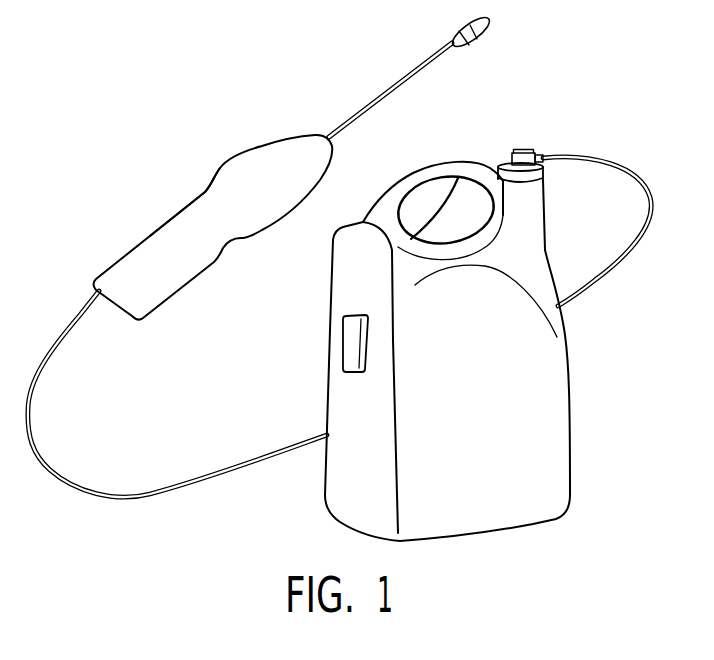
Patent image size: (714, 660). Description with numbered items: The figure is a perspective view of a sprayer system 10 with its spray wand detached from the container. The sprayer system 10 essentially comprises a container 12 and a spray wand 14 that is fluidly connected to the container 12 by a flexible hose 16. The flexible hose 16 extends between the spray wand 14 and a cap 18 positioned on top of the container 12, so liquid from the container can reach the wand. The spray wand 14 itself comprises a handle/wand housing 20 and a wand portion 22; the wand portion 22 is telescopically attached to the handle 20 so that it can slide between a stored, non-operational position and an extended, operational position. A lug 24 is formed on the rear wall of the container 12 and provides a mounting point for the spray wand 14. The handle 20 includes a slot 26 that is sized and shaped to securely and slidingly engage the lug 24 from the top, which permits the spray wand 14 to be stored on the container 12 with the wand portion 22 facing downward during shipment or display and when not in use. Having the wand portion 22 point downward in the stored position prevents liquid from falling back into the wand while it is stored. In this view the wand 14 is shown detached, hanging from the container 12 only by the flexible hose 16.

The sprayer system 10 is at (512, 110).
The container 12 is at (543, 357).
The spray wand 14 is at (305, 108).
The flexible hose 16 is at (58, 478).
The cap 18 is at (545, 177).
The handle/wand housing 20 is at (158, 241).
The wand portion 22 is at (410, 78).
The lug 24 is at (342, 338).
The slot 26 is at (207, 155).